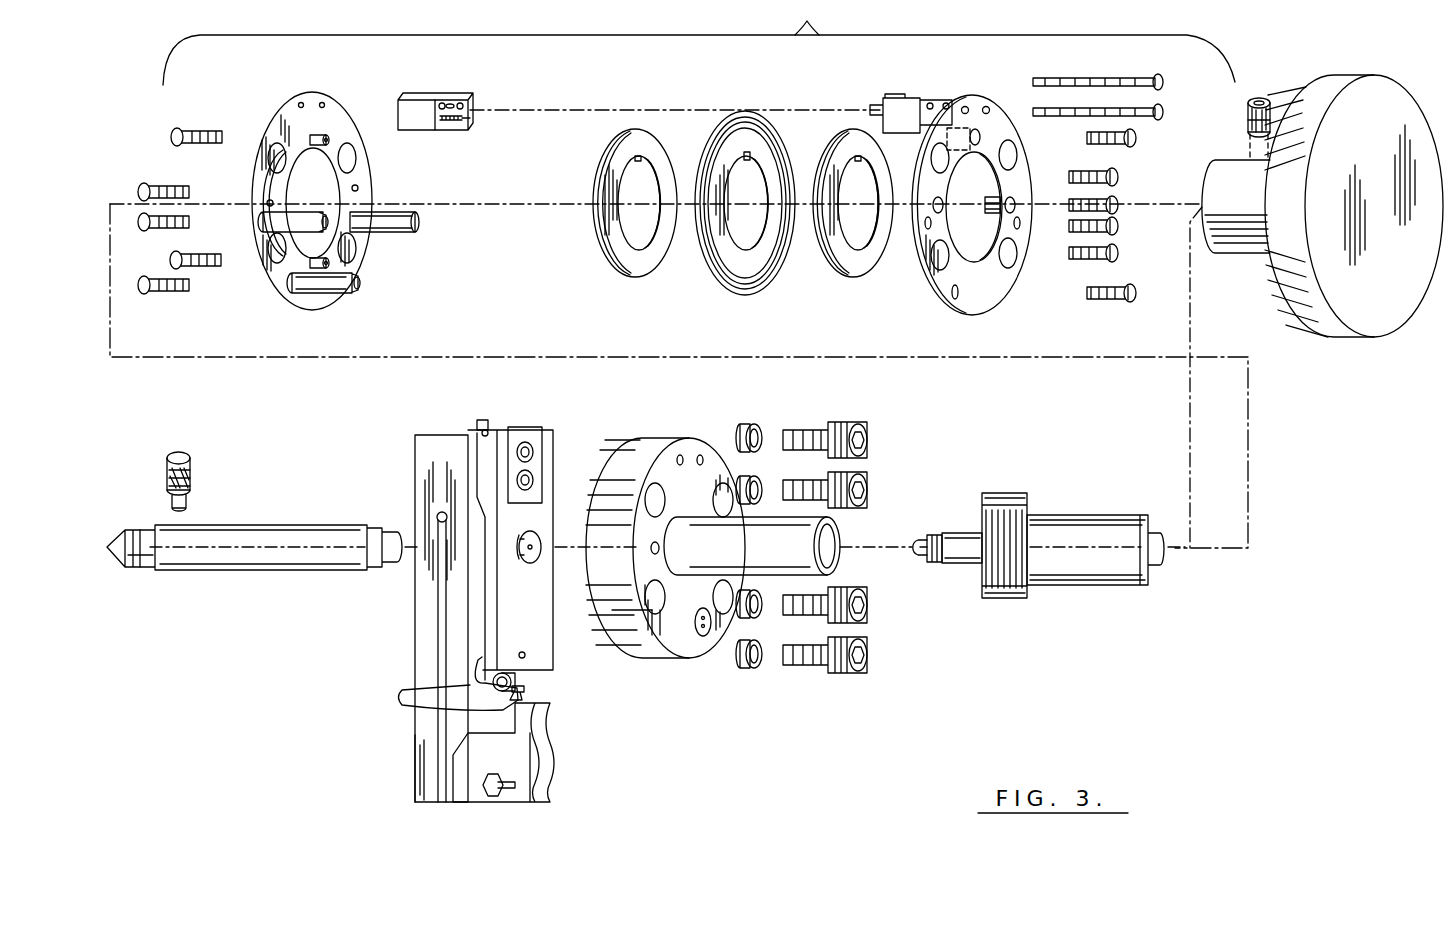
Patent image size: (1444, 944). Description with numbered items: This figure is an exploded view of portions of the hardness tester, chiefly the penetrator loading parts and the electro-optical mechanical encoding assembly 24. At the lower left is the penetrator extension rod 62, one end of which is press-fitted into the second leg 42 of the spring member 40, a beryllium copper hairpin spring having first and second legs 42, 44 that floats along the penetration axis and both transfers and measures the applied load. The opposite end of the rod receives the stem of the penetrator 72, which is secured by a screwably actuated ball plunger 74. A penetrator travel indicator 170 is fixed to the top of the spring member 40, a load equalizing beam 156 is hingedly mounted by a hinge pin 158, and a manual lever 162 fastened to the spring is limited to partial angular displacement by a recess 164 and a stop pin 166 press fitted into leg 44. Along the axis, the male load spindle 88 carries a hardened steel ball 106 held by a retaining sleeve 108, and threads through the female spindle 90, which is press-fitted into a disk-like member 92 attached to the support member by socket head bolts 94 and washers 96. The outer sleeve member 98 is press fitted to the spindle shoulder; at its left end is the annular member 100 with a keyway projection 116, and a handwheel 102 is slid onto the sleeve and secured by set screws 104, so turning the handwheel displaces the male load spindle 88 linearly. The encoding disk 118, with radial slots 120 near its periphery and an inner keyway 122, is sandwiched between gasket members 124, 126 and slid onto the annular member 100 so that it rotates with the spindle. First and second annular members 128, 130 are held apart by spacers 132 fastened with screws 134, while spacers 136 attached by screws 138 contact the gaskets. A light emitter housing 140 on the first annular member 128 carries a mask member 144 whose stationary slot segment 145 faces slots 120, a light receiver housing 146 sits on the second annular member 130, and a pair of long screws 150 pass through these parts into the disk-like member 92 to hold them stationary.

The electro-optical mechanical encoding assembly 24 is at (778, 32).
The spring member 40 is at (427, 446).
The second leg 42 is at (425, 775).
The first leg 44 is at (450, 790).
The penetrator extension rod 62 is at (268, 535).
The penetrator 72 is at (144, 558).
The ball plunger 74 is at (192, 471).
The male load spindle 88 is at (956, 532).
The female spindle 90 is at (768, 560).
The disk-like member 92 is at (650, 645).
The bolts 94 is at (808, 668).
The washers 96 is at (749, 670).
The outer sleeve member 98 is at (1098, 575).
The annular member 100 is at (1010, 586).
The handwheel 102 is at (1375, 320).
The set screws 104 is at (1252, 100).
The hardened steel ball 106 is at (912, 542).
The retaining sleeve 108 is at (934, 560).
The keyway projection 116 is at (1010, 498).
The encoding disk 118 is at (733, 258).
The slots 120 is at (758, 290).
The keyway 122 is at (750, 156).
The gasket member 124 is at (625, 258).
The gasket member 126 is at (860, 262).
The first annular member 128 is at (308, 313).
The second annular member 130 is at (990, 295).
The spacers 132 is at (300, 280).
The screws 134 is at (160, 292).
The spacers 136 is at (323, 123).
The screws 138 is at (200, 128).
The light emitter housing 140 is at (422, 122).
The mask member 144 is at (455, 125).
The slots 145 is at (470, 118).
The light receiver housing 146 is at (900, 105).
The long screws 150 is at (1088, 110).
The load equalizing beam 156 is at (505, 445).
The hinge pin 158 is at (487, 430).
The manual lever 162 is at (418, 697).
The recess 164 is at (530, 700).
The stop pin 166 is at (530, 690).
The penetrator travel indicator 170 is at (480, 426).